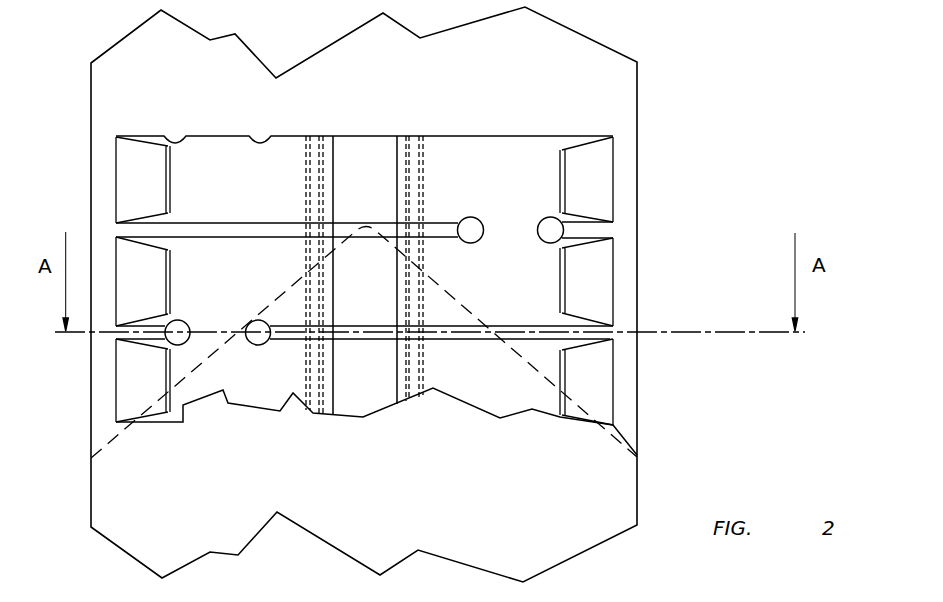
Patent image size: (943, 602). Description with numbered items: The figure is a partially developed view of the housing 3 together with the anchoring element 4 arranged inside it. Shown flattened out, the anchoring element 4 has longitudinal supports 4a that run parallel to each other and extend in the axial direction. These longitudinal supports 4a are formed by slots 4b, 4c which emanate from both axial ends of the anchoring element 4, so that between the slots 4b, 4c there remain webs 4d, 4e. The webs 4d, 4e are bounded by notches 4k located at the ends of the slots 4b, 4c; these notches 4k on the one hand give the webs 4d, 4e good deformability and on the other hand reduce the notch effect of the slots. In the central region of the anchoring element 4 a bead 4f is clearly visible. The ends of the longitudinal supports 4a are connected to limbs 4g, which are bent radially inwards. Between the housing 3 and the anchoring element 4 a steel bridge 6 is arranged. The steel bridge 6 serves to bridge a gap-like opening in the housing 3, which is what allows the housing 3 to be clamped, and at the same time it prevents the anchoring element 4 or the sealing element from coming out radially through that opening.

The housing 3 is at (572, 80).
The anchoring element 4 is at (619, 305).
The longitudinal supports 4a is at (250, 173).
The slots 4b is at (183, 231).
The slots 4c is at (580, 231).
The webs 4d is at (505, 222).
The webs 4e is at (237, 330).
The bead 4f is at (360, 153).
The limbs 4g is at (590, 383).
The notches 4k is at (554, 230).
The steel bridge 6 is at (620, 442).